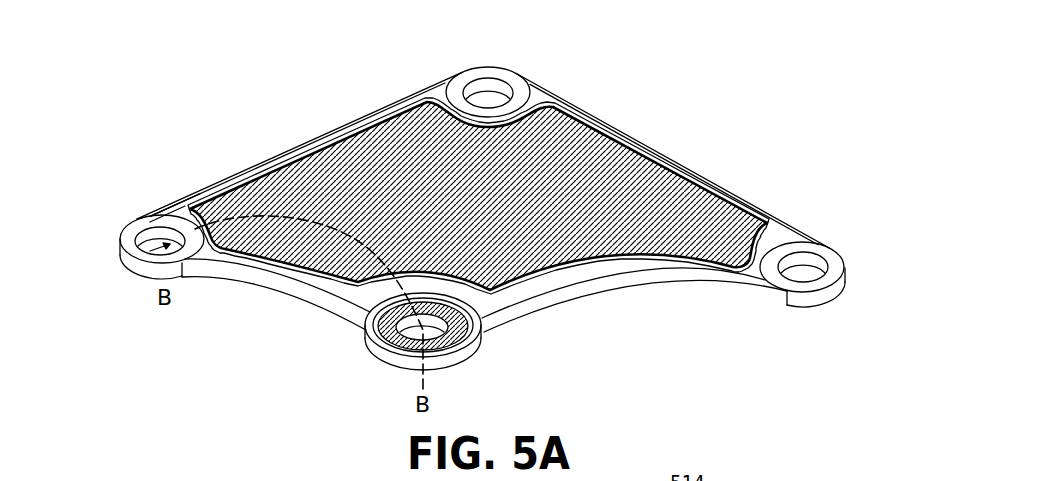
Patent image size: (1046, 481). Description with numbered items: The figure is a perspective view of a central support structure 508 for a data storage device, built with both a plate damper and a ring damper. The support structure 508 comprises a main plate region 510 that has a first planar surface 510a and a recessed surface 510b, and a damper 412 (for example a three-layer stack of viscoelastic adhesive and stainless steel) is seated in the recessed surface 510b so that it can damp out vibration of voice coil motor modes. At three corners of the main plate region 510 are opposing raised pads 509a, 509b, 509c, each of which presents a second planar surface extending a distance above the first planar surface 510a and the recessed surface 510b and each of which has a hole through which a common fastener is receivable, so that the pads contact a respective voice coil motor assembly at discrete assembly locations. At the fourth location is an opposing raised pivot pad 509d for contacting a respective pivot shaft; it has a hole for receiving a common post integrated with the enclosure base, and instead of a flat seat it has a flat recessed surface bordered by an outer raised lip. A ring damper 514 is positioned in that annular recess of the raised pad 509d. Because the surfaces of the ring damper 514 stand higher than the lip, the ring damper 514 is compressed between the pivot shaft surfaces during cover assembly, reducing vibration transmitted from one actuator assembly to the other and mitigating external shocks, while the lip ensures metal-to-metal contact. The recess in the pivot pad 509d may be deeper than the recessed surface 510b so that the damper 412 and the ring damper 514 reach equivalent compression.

The central support structure 508 is at (305, 136).
The main plate region 510 is at (385, 102).
The first planar surface 510a is at (173, 209).
The recessed surface 510b is at (176, 204).
The raised pad 509a is at (493, 79).
The raised pad 509b is at (128, 239).
The raised pad 509c is at (830, 257).
The raised pivot pad 509d is at (473, 338).
The damper 412 is at (640, 148).
The ring damper 514 is at (378, 328).